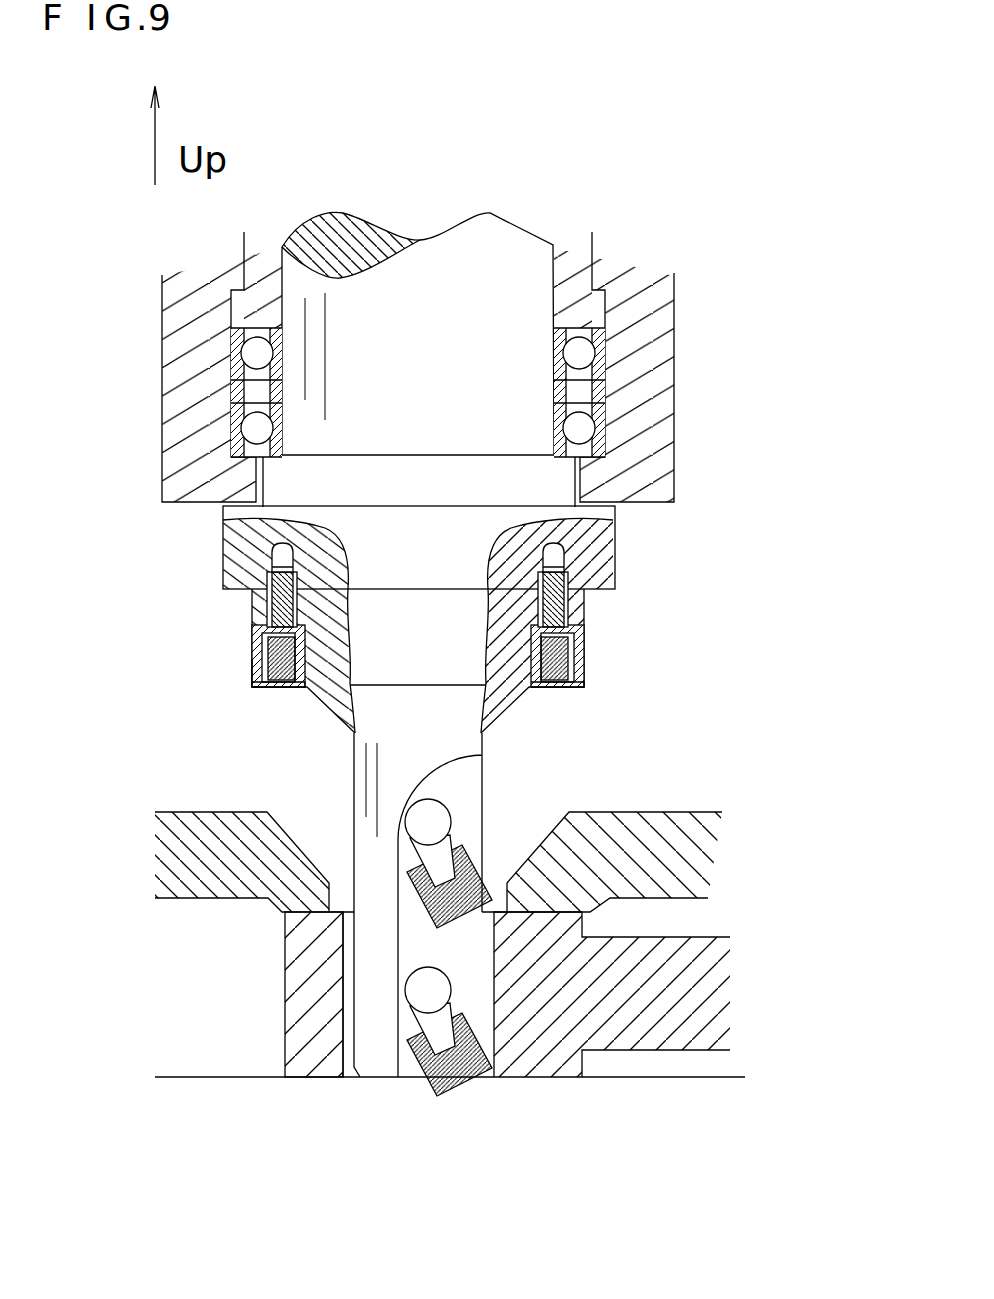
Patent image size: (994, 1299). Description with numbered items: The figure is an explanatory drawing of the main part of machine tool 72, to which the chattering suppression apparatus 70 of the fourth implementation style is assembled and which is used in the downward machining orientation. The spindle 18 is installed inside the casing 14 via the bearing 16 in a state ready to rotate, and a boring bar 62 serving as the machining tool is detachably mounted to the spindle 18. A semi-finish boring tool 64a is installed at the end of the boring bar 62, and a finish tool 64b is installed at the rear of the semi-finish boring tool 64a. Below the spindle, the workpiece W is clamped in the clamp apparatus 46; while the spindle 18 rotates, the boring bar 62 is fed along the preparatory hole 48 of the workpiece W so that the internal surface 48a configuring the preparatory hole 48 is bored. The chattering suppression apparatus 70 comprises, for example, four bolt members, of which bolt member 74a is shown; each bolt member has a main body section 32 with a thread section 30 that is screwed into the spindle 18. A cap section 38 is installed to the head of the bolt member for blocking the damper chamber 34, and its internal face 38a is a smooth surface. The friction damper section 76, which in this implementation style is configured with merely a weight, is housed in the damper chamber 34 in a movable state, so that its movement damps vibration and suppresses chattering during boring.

The casing 14 is at (658, 383).
The bearing 16 is at (253, 423).
The spindle 18 is at (503, 248).
The thread section 30 is at (225, 568).
The main body section 32 is at (596, 657).
The damper chamber 34 is at (558, 688).
The cap section 38 is at (293, 689).
The internal face of the cap 38a is at (252, 672).
The clamp apparatus 46 is at (668, 822).
The preparatory hole 48 is at (345, 1050).
The internal surface 48a is at (347, 1000).
The boring bar 62 is at (332, 826).
The semi-finish boring tool 64a is at (457, 1083).
The finish tool 64b is at (478, 848).
The chattering suppression apparatus 70 is at (603, 610).
The machine tool 72 is at (830, 543).
The bolt member 74a is at (254, 633).
The friction damper section 76 is at (254, 655).
The workpiece W is at (580, 1078).